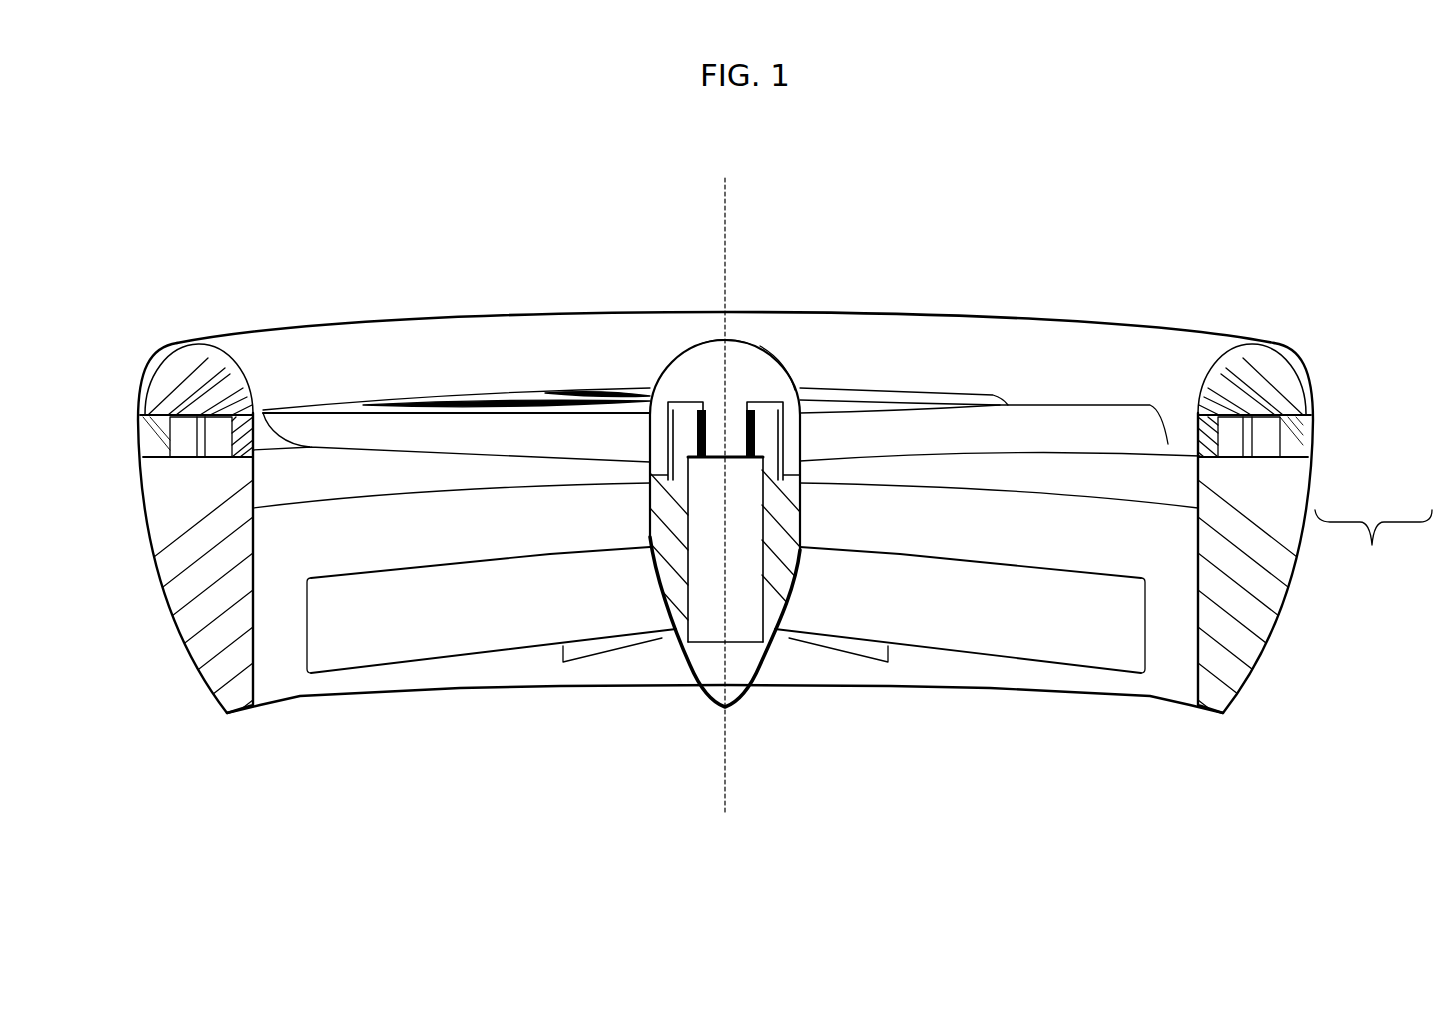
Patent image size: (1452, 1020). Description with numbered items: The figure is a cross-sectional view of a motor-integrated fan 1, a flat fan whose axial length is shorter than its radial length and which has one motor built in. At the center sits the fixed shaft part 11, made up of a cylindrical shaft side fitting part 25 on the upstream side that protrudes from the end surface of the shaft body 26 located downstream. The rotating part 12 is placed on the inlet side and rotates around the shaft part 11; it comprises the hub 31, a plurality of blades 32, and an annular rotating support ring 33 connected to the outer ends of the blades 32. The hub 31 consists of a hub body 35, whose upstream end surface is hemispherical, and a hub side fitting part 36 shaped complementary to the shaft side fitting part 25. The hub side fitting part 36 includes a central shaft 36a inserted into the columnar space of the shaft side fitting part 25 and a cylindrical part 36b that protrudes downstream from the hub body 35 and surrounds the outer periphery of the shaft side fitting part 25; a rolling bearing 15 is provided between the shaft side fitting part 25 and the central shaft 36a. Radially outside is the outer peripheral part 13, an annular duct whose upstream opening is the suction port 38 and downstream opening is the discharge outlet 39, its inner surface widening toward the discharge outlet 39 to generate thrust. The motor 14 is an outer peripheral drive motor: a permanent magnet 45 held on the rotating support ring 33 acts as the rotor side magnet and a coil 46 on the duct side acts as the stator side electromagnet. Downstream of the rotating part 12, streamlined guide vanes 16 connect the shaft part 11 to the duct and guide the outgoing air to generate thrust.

The motor-integrated fan 1 is at (726, 203).
The shaft part 11 is at (677, 653).
The rotating part 12 is at (781, 353).
The outer peripheral part 13 is at (328, 322).
The motor 14 is at (1373, 560).
The rolling bearing 15 is at (684, 400).
The guide vane 16 is at (988, 640).
The shaft side fitting part 25 is at (712, 418).
The shaft body 26 is at (779, 595).
The hub 31 is at (741, 339).
The blades 32 is at (455, 428).
The rotating support ring 33 is at (172, 440).
The hub body 35 is at (683, 400).
The hub side fitting part 36 is at (646, 443).
The central shaft 36a is at (714, 465).
The cylindrical part 36b is at (686, 557).
The suction port 38 is at (999, 314).
The discharge outlet 39 is at (1055, 710).
The permanent magnet 45 is at (1265, 470).
The coil 46 is at (1266, 442).